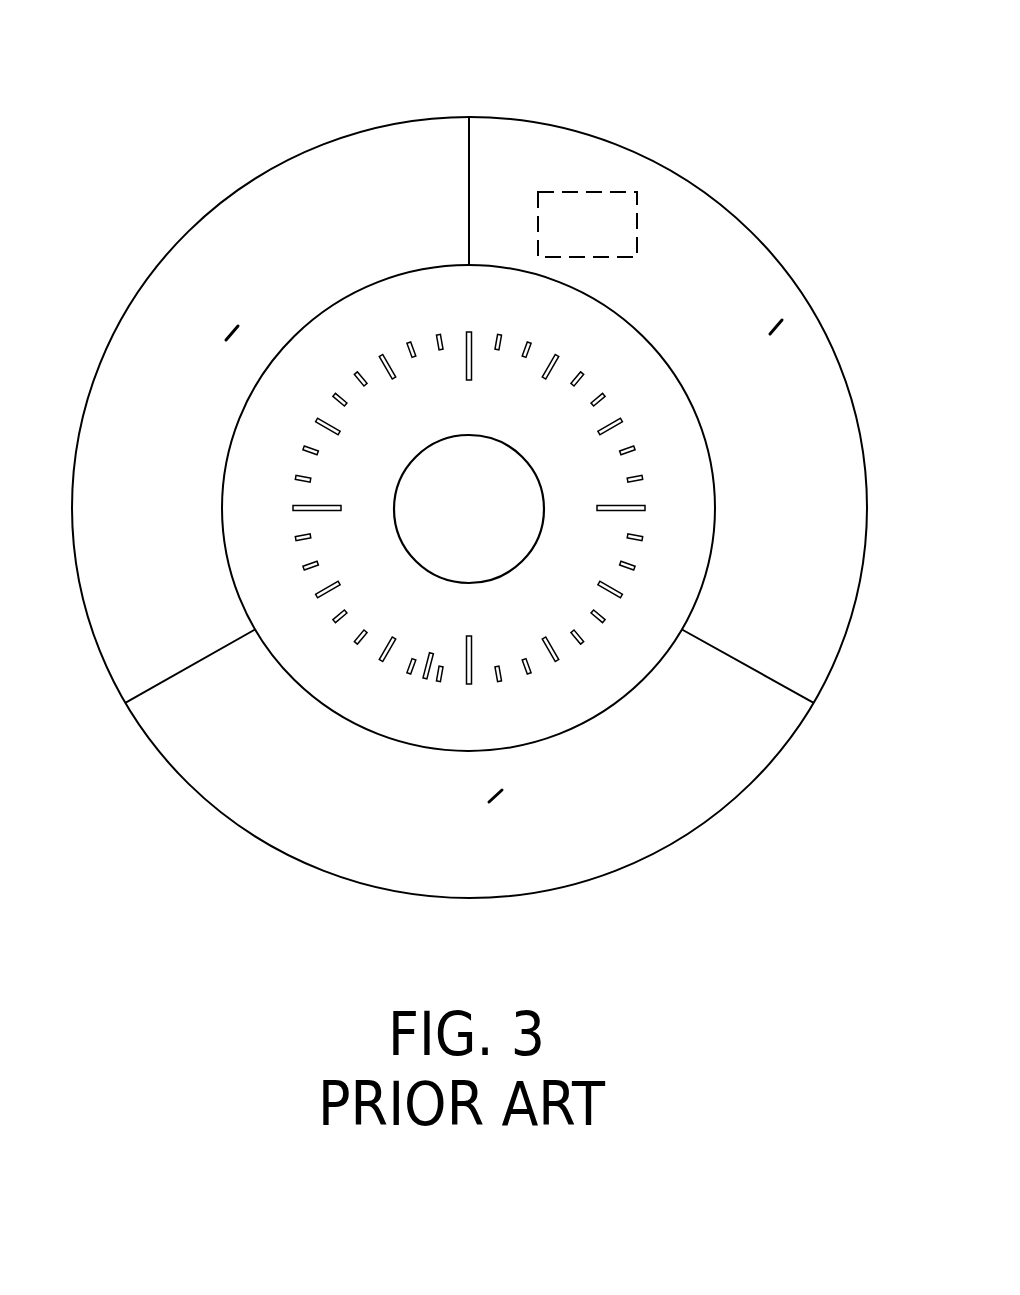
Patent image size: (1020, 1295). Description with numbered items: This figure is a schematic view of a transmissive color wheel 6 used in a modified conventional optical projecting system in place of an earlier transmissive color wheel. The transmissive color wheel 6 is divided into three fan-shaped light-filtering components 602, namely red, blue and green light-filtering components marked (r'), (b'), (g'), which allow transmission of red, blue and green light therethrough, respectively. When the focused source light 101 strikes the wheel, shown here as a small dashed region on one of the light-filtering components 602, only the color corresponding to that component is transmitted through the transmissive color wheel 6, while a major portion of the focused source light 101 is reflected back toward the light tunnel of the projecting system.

The transmissive color wheel 6 is at (303, 130).
The fan-shaped light-filtering components 602 is at (245, 270).
The focused source light 101 is at (601, 190).